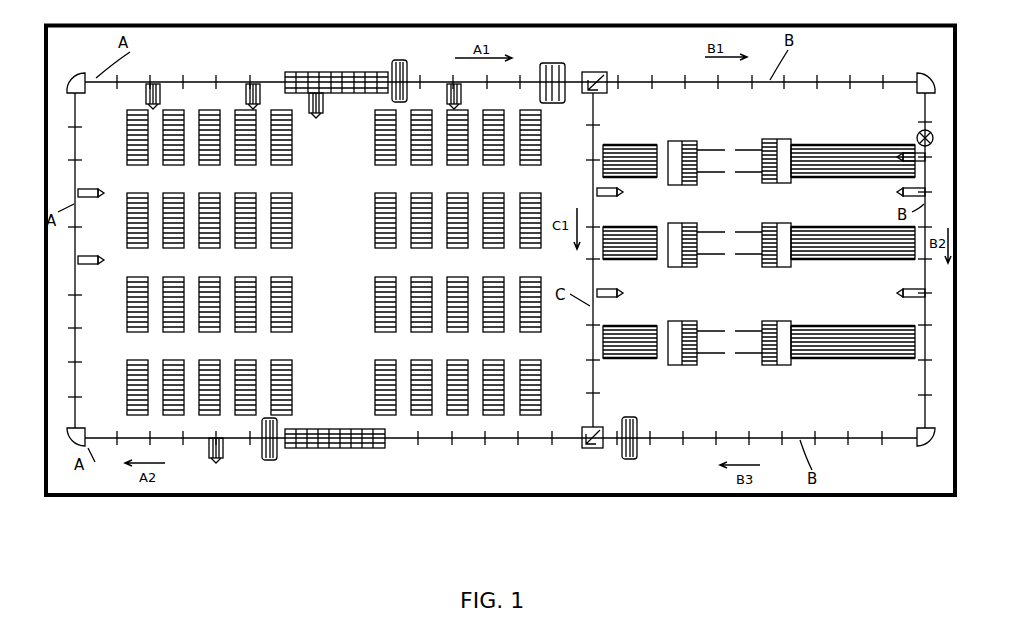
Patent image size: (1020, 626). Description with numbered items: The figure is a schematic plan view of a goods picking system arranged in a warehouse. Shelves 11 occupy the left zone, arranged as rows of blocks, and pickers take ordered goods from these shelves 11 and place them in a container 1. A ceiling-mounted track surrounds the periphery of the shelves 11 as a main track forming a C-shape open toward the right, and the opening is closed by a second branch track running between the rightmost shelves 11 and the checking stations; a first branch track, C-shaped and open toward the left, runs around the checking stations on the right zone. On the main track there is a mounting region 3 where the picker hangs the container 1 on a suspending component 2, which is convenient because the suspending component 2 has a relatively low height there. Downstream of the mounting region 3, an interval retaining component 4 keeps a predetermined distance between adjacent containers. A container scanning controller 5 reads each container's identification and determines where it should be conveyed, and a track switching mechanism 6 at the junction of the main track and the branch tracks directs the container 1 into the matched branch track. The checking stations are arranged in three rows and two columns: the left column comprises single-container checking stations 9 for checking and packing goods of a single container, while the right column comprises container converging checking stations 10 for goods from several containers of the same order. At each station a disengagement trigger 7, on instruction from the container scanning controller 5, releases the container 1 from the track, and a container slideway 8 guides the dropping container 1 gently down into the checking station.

The container 1 is at (155, 86).
The suspending component 2 is at (186, 82).
The mounting region 3 is at (318, 74).
The interval retaining component 4 is at (403, 64).
The container scanning controller 5 is at (558, 68).
The track switching mechanism 6 is at (594, 74).
The disengagement trigger 7 is at (916, 128).
The container slideway 8 is at (630, 145).
The single-container checking station 9 is at (692, 141).
The container converging checking station 10 is at (782, 139).
The shelf 11 is at (375, 220).